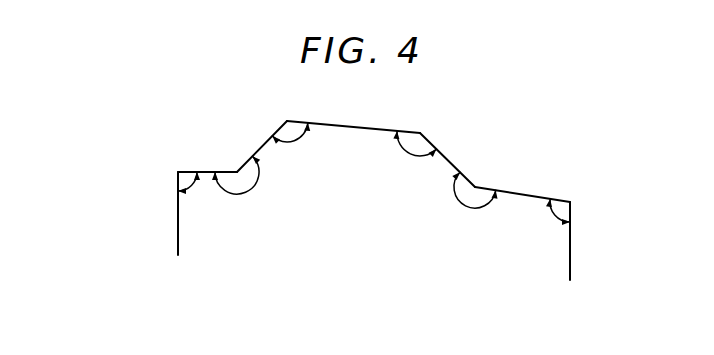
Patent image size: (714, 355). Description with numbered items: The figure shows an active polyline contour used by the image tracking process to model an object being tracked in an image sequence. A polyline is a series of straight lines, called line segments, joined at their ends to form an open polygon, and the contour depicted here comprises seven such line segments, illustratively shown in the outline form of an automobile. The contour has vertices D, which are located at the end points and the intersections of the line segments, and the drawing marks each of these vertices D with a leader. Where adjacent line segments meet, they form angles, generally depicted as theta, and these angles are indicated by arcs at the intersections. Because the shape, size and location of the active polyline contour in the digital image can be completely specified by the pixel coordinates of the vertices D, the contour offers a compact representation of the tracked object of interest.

The vertices D is at (343, 184).